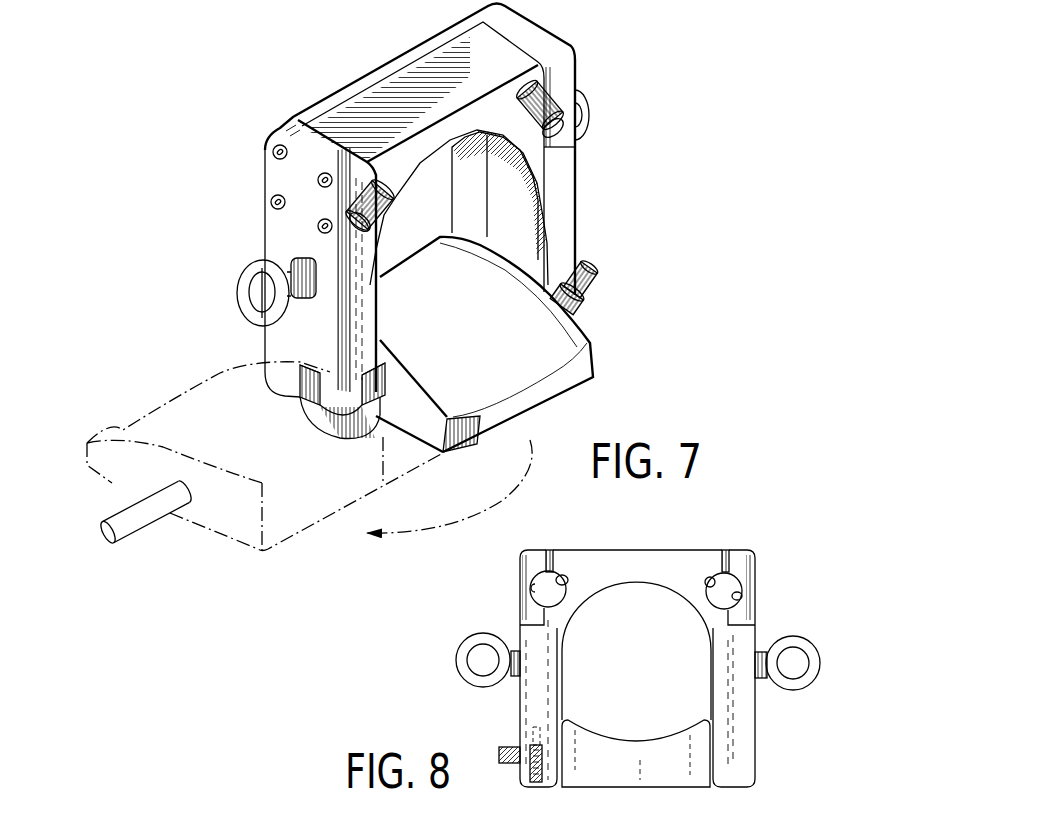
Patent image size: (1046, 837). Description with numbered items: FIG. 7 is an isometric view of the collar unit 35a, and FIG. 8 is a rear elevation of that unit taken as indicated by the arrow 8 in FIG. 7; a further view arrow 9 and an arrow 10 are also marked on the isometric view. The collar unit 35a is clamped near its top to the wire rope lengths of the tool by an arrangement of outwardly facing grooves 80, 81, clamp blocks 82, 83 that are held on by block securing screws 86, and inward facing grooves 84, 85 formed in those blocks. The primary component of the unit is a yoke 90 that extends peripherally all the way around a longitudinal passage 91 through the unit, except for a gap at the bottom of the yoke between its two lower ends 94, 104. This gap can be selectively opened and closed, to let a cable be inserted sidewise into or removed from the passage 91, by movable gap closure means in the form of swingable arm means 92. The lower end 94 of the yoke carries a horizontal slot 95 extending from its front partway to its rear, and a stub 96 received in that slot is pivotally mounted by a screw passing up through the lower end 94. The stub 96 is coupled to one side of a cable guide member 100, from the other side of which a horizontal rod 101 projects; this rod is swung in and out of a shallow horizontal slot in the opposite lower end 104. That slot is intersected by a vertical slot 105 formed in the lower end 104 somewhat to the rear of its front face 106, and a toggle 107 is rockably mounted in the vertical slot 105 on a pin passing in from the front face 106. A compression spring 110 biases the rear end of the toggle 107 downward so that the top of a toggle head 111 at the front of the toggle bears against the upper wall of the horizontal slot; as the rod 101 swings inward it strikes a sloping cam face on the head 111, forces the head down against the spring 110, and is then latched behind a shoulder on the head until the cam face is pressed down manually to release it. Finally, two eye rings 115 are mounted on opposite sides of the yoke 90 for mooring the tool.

In FIG. 7, the arrow 8 is at (250, 84).
In FIG. 7, the section line 9- 9 is at (413, 0).
In FIG. 7, the clamp assembly 10 is at (648, 86).
In FIG. 7, the collar unit 35a is at (304, 72).
In FIG. 8, the collar unit 35a is at (722, 536).
In FIG. 7, the outwardly facing groove 80 is at (388, 208).
In FIG. 8, the outwardly facing groove 80 is at (715, 578).
In FIG. 7, the outwardly facing groove 81 is at (555, 100).
In FIG. 8, the outwardly facing groove 81 is at (560, 580).
In FIG. 7, the clamp block 82 is at (280, 182).
In FIG. 8, the clamp block 82 is at (750, 563).
In FIG. 7, the clamp block 83 is at (548, 36).
In FIG. 8, the clamp block 83 is at (527, 570).
In FIG. 7, the inward facing groove 84 is at (372, 220).
In FIG. 8, the inward facing groove 84 is at (737, 597).
In FIG. 7, the inward facing groove 85 is at (570, 92).
In FIG. 8, the inward facing groove 85 is at (533, 588).
In FIG. 7, the block securing screws 86 is at (318, 180).
In FIG. 8, the block securing screws 86 is at (550, 548).
In FIG. 7, the yoke 90 is at (563, 173).
In FIG. 8, the yoke 90 is at (748, 748).
In FIG. 7, the longitudinal passage 91 is at (432, 234).
In FIG. 8, the longitudinal passage 91 is at (640, 666).
In FIG. 7, the swingable arm means 92 is at (601, 340).
In FIG. 7, the lower end 94 is at (290, 398).
In FIG. 7, the horizontal slot 95 is at (303, 397).
In FIG. 7, the stub 96 is at (377, 387).
In FIG. 8, the stub 96 is at (716, 763).
In FIG. 7, the cable guide member 100 is at (565, 380).
In FIG. 8, the cable guide member 100 is at (667, 777).
In FIG. 7, the horizontal rod 101 is at (595, 280).
In FIG. 8, the horizontal rod 101 is at (507, 750).
In FIG. 7, the lower end 104 is at (573, 243).
In FIG. 8, the vertical slot 105 is at (530, 768).
In FIG. 7, the front face 106 is at (563, 207).
In FIG. 8, the toggle 107 is at (539, 780).
In FIG. 8, the compression spring 110 is at (537, 748).
In FIG. 7, the toggle head 111 is at (582, 312).
In FIG. 7, the eye rings 115 is at (238, 290).
In FIG. 8, the eye rings 115 is at (456, 660).